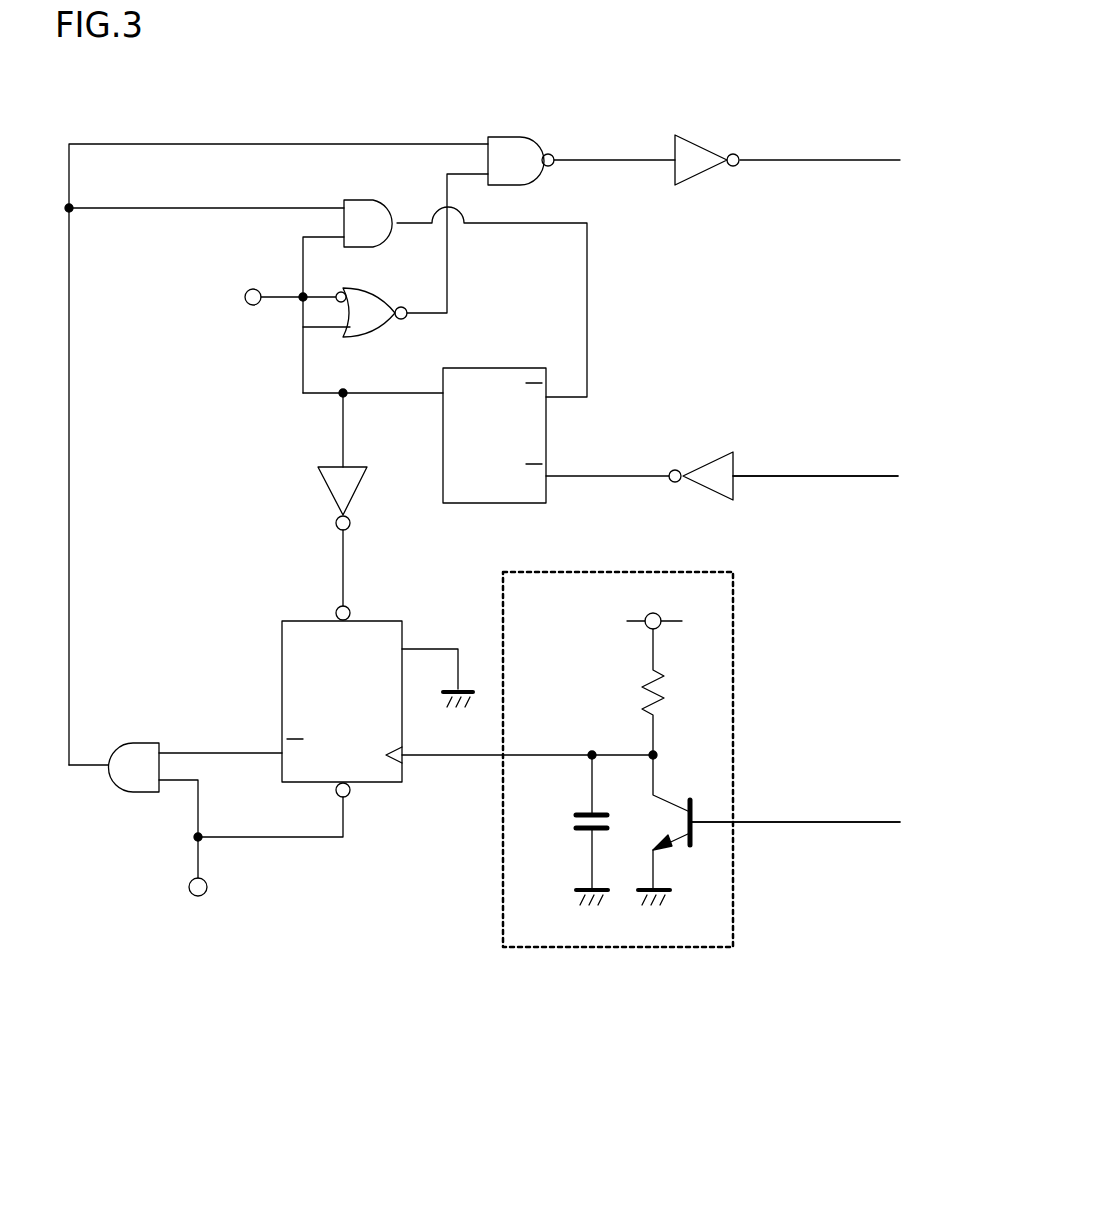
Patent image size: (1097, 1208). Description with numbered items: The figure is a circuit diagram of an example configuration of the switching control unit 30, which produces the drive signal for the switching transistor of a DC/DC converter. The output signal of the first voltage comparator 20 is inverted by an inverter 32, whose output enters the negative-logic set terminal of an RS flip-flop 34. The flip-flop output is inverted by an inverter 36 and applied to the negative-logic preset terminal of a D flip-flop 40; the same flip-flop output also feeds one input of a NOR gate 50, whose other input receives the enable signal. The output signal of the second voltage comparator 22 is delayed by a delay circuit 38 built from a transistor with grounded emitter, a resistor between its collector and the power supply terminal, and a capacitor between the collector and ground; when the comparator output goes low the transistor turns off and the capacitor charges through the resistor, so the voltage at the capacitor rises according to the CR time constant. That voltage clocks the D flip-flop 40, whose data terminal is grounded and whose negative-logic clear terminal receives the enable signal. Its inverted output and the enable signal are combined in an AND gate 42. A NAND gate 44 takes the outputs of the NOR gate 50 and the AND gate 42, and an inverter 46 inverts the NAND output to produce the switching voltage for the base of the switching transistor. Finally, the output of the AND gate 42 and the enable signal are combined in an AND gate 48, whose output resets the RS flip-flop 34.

The first voltage comparator 20 is at (839, 477).
The second voltage comparator 22 is at (817, 823).
The switching control unit 30 is at (537, 1077).
The inverter 32 is at (706, 461).
The RS flip-flop 34 is at (493, 368).
The inverter 36 is at (328, 490).
The delay circuit 38 is at (502, 872).
The D flip-flop 40 is at (282, 660).
The AND gate 42 is at (143, 792).
The NAND gate 44 is at (505, 137).
The inverter 46 is at (705, 148).
The AND gate 48 is at (360, 200).
The NOR gate 50 is at (378, 289).